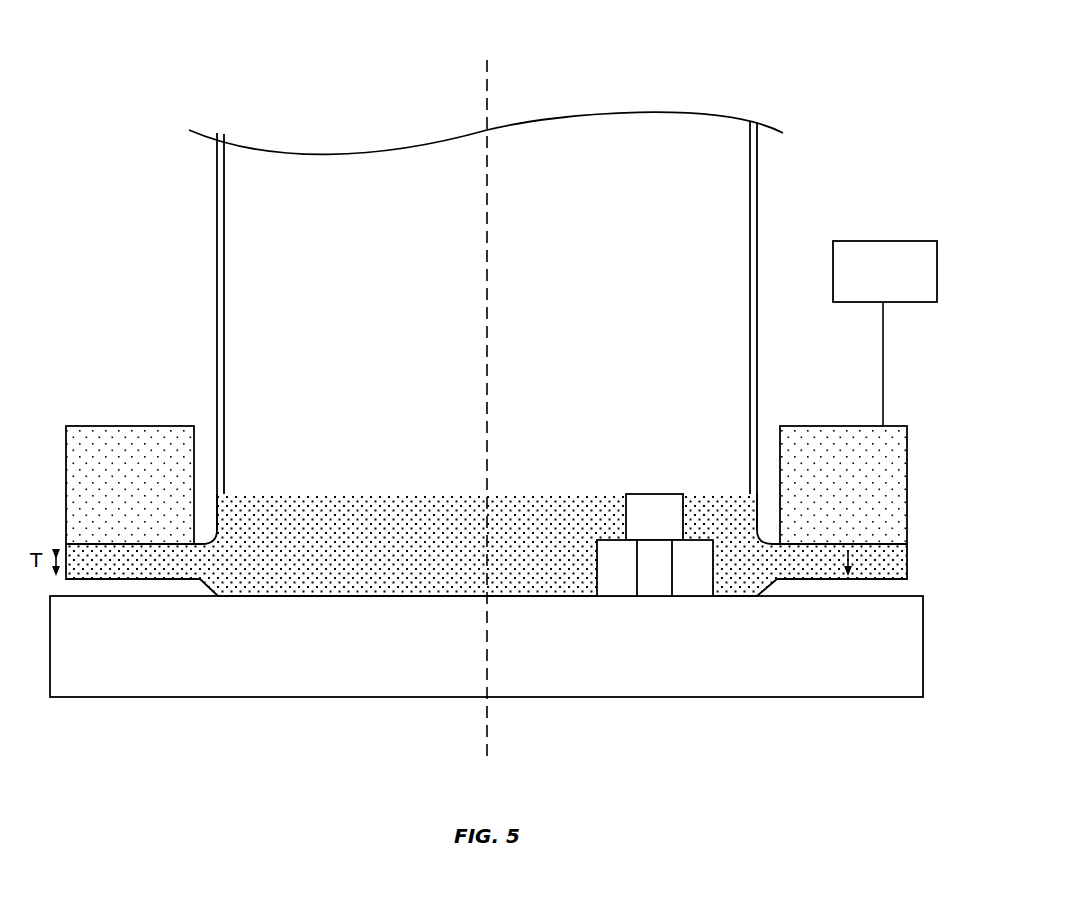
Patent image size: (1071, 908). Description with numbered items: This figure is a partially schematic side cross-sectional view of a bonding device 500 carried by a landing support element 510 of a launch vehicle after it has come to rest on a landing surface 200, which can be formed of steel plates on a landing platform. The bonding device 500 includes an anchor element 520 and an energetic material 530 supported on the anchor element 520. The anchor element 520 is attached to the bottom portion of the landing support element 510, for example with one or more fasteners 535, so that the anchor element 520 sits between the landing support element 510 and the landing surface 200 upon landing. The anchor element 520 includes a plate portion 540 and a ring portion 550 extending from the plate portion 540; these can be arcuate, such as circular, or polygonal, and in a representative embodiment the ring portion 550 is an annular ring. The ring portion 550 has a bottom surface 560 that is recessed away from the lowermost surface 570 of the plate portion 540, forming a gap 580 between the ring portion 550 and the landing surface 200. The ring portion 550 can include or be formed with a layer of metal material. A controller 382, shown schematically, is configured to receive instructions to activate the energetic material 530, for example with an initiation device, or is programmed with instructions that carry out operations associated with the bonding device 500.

The landing surface 200 is at (119, 680).
The controller 382 is at (896, 250).
The bonding device 500 is at (777, 372).
The landing support element 510 is at (252, 265).
The anchor element 520 is at (325, 572).
The energetic material 530 is at (128, 440).
The fastener 535 is at (655, 510).
The plate portion 540 is at (543, 570).
The ring portion 550 is at (898, 562).
The bottom surface 560 is at (811, 580).
The lowermost surface 570 is at (400, 595).
The gap 580 is at (848, 604).